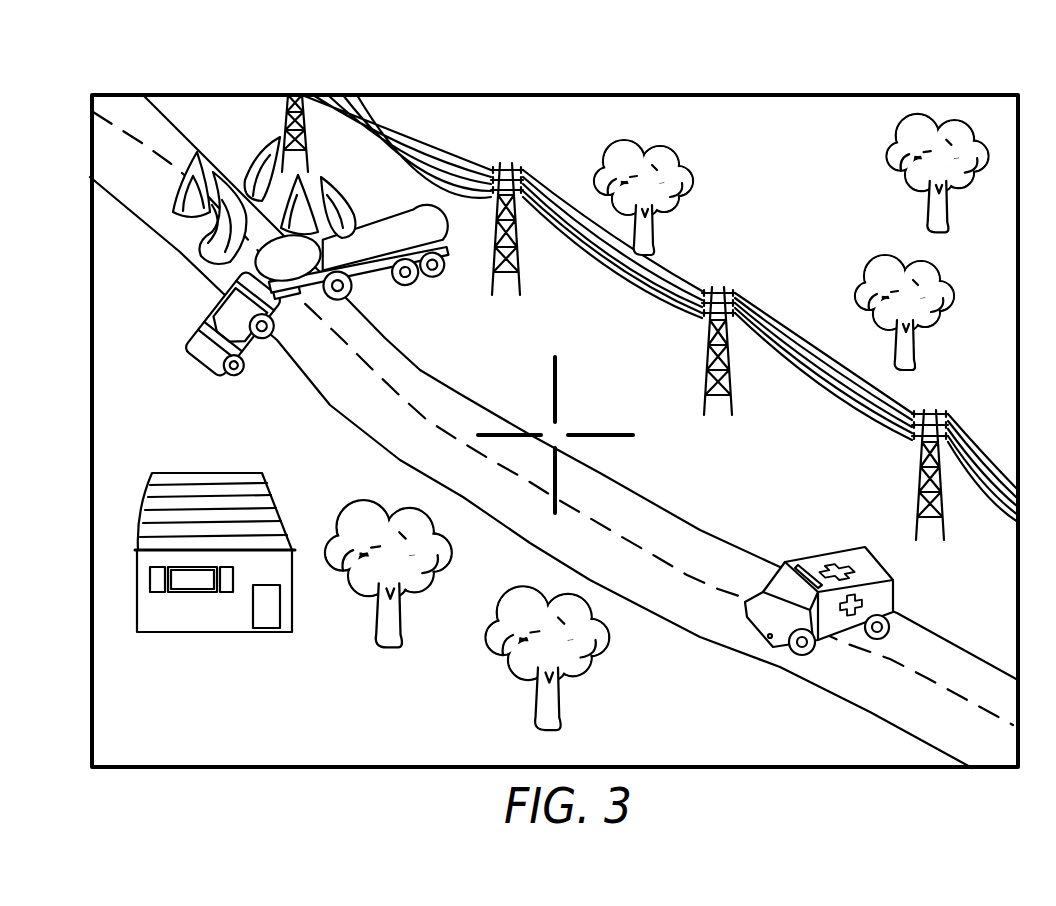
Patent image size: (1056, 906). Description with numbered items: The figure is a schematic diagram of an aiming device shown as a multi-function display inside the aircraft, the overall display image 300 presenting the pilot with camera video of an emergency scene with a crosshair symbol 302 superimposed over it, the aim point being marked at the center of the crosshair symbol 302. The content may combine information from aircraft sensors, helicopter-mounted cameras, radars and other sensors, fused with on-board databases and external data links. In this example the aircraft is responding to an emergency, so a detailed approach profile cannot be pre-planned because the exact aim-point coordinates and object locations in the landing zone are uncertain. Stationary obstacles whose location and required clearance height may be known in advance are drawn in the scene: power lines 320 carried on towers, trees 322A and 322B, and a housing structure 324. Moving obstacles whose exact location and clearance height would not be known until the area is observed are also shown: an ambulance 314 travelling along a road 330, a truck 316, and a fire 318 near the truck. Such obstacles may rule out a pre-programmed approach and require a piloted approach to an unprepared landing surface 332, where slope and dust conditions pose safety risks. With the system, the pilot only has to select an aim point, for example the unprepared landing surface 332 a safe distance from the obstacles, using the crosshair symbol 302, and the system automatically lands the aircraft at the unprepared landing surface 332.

The image of scene captured by camera 300 is at (226, 90).
The crosshair symbol 302 is at (553, 408).
The ambulance 314 is at (853, 560).
The truck 316 is at (446, 244).
The fire 318 is at (345, 203).
The power lines 320 is at (660, 276).
The tree 322A is at (378, 629).
The tree 322B is at (535, 712).
The housing structure 324 is at (182, 618).
The road 330 is at (718, 562).
The unprepared landing surface 332 is at (627, 378).